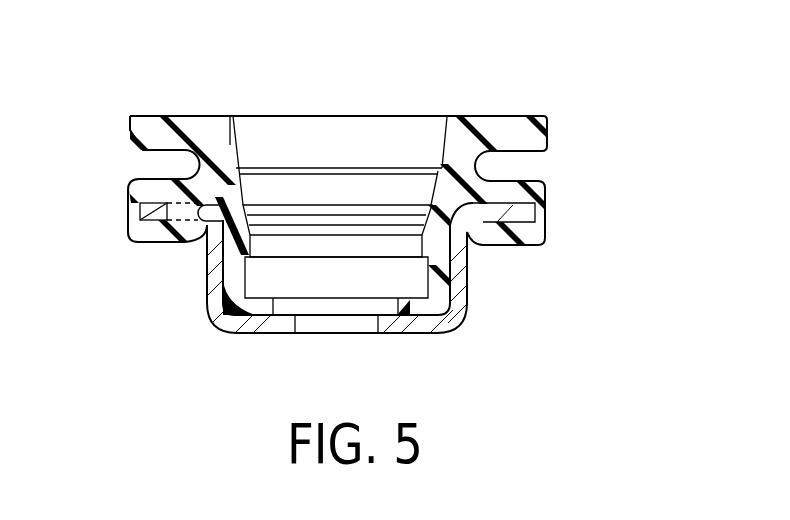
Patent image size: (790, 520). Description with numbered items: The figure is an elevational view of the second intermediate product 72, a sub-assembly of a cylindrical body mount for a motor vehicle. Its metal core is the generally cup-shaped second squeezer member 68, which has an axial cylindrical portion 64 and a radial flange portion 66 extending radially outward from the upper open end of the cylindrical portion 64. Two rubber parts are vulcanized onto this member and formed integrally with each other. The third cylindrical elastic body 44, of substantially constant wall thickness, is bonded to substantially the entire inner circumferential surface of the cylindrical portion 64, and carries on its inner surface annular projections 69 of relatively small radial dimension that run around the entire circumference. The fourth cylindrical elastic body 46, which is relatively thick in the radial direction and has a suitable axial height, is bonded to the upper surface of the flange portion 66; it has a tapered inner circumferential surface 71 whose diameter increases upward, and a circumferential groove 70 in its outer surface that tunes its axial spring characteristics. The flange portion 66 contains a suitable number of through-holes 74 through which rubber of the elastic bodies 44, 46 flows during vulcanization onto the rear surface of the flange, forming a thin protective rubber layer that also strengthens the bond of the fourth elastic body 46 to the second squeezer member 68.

The second intermediate product 72 is at (527, 80).
The circumferential groove 70 is at (172, 152).
The tapered inner circumferential surface 71 is at (233, 145).
The fourth cylindrical elastic body 46 is at (461, 116).
The third cylindrical elastic body 44 is at (233, 275).
The annular projections 69 is at (337, 247).
The second squeezer member 68 is at (380, 307).
The cylindrical portion 64 is at (458, 280).
The flange portion 66 is at (535, 222).
The through-holes 74 is at (174, 246).